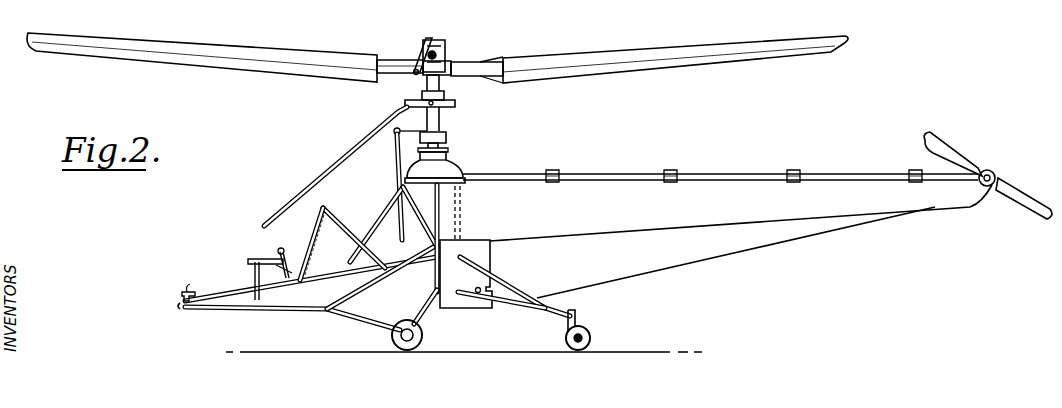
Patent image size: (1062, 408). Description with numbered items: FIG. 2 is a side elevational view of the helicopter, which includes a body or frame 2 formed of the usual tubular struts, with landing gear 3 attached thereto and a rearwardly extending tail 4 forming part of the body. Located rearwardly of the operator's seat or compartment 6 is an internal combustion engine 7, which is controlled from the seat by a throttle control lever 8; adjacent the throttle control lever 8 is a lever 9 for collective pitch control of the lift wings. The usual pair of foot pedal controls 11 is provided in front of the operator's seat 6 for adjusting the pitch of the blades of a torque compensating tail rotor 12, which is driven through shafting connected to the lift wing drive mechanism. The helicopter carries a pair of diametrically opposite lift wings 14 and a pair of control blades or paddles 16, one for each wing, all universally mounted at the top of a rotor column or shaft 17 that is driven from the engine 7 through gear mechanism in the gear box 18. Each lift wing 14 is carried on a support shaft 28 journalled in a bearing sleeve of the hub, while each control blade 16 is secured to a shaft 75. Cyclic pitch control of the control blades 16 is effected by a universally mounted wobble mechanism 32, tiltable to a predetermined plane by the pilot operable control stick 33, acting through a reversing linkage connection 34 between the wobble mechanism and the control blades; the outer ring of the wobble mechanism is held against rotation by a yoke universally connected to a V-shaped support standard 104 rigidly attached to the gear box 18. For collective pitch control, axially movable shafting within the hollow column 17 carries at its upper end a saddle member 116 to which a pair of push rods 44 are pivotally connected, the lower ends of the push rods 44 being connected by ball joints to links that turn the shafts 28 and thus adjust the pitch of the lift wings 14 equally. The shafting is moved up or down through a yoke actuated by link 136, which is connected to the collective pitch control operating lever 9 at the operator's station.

The body or frame 2 is at (327, 314).
The landing gear 3 is at (418, 347).
The tail 4 is at (713, 246).
The operator's seat or compartment 6 is at (312, 243).
The internal combustion engine 7 is at (489, 246).
The throttle control lever 8 is at (250, 260).
The collective pitch control lever 9 is at (280, 251).
The foot pedal controls 11 is at (187, 291).
The torque compensating tail rotor 12 is at (1026, 201).
The lift wings 14 is at (233, 56).
The control blades or paddles 16 is at (480, 62).
The rotor column or shaft 17 is at (442, 121).
The gear box 18 is at (449, 166).
The support shaft 28 is at (381, 60).
The wobble mechanism 32 is at (412, 101).
The control stick 33 is at (336, 169).
The reversing linkage connection 34 is at (445, 96).
The push rods 44 is at (421, 38).
The shaft 75 is at (449, 62).
The V-shaped support standard 104 is at (447, 138).
The saddle member 116 is at (441, 45).
The actuating link 136 is at (395, 183).